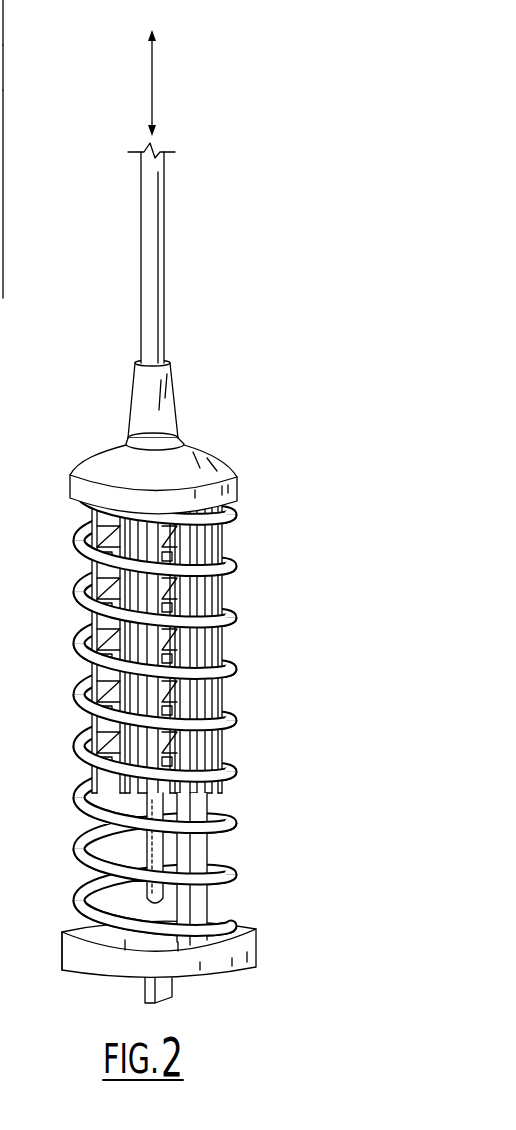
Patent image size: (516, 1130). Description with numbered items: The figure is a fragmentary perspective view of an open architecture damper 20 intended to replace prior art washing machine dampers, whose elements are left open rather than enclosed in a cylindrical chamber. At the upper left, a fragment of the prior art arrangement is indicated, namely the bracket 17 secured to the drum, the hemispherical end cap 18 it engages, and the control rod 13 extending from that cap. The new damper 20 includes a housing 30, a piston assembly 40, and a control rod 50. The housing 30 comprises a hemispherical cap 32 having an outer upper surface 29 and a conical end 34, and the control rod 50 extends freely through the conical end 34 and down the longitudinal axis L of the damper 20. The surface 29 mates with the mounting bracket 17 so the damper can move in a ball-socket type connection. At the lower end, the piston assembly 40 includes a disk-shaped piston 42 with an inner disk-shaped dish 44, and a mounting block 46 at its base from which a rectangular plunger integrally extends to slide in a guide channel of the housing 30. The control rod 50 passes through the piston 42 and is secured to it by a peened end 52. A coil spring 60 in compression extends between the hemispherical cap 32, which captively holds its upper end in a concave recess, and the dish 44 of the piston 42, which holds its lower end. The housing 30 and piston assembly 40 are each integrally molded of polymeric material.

The control rod 13 is at (3, 18).
The bracket 17 is at (3, 72).
The hemispherical end cap 18 is at (3, 106).
The longitudinal axis L is at (152, 70).
The open architecture damper 20 is at (293, 557).
The outer upper surface 29 is at (93, 468).
The housing 30 is at (188, 432).
The hemispherical cap 32 is at (236, 494).
The conical end 34 is at (131, 398).
The piston assembly 40 is at (265, 920).
The disk-shaped piston 42 is at (251, 952).
The inner disk-shaped dish 44 is at (62, 937).
The mounting block 46 is at (140, 902).
The control rod 50 is at (168, 276).
The peened end 52 is at (166, 989).
The coil spring 60 is at (207, 717).